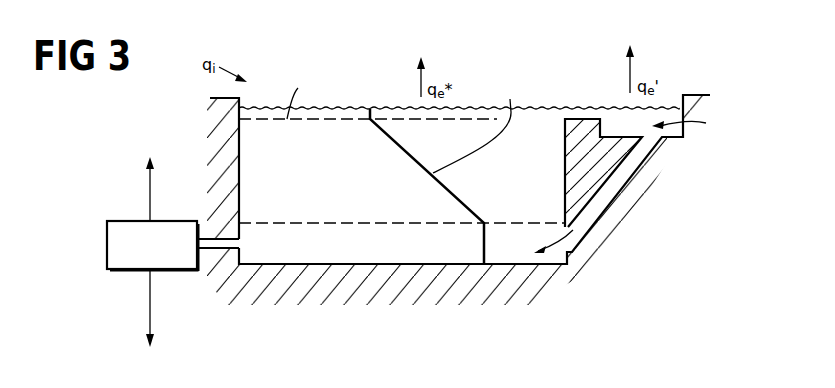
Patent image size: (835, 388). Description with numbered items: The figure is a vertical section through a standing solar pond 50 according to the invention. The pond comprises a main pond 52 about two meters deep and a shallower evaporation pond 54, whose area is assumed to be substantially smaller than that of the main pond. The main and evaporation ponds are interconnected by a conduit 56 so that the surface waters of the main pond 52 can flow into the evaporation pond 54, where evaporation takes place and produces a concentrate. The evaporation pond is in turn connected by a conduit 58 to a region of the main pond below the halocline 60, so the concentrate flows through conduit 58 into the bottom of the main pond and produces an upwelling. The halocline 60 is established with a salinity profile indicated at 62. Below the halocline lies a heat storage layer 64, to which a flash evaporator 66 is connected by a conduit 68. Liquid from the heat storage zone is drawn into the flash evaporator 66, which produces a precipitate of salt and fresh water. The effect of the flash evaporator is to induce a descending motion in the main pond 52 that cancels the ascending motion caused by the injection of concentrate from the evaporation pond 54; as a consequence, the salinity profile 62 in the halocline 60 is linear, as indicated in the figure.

The standing solar pond 50 is at (387, 64).
The main pond 52 is at (274, 102).
The evaporation pond 54 is at (689, 123).
The conduit 56 is at (582, 112).
The conduit 58 is at (602, 195).
The halocline 60 is at (257, 155).
The salinity profile 62 is at (448, 192).
The heat storage layer 64 is at (287, 243).
The flash evaporator 66 is at (112, 272).
The conduit 68 is at (208, 250).